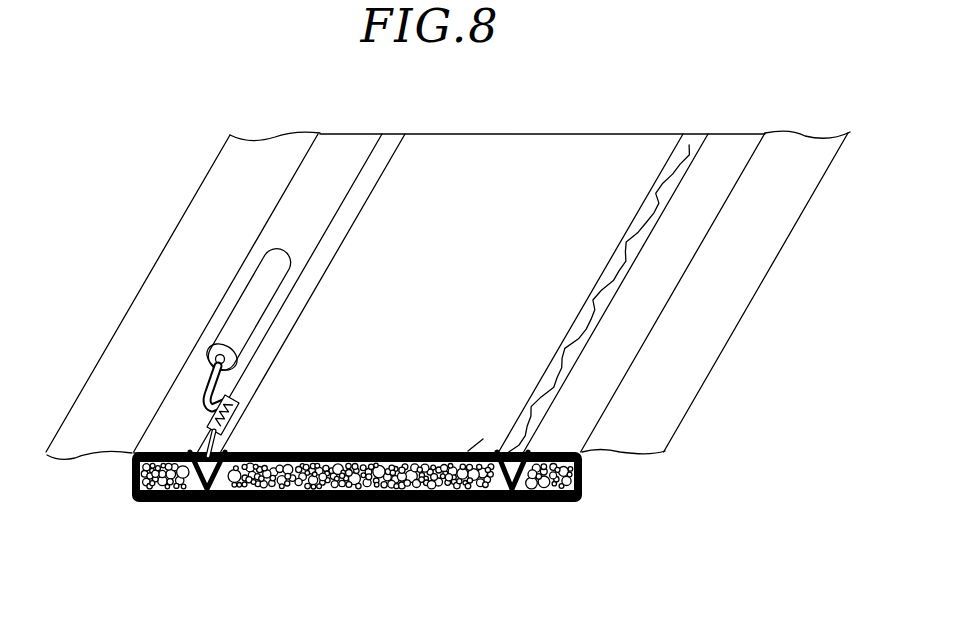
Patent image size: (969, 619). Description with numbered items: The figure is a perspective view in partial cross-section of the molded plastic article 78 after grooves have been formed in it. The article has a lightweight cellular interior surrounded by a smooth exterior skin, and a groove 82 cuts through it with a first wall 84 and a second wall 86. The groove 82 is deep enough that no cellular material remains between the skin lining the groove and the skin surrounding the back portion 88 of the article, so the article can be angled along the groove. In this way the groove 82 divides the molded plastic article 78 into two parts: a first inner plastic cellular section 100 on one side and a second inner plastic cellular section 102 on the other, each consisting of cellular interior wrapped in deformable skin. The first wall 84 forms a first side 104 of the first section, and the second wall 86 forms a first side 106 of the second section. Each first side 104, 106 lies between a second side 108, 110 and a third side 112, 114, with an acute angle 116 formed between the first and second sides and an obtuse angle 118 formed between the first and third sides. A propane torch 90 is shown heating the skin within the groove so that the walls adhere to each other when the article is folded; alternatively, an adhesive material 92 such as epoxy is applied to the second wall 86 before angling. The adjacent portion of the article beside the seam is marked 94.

The molded plastic article 78 is at (604, 96).
The groove 82 is at (388, 150).
The first wall 84 is at (203, 450).
The second wall 86 is at (235, 428).
The back portion 88 is at (377, 503).
The propane torch 90 is at (288, 262).
The adhesive material 92 is at (622, 258).
The second panel 94 is at (612, 452).
The first inner plastic cellular section 100 is at (453, 503).
The second inner plastic cellular section 102 is at (125, 473).
The first side 104 is at (337, 248).
The first side 106 is at (357, 205).
The second side 108 is at (183, 503).
The second side 110 is at (427, 503).
The third side 112 is at (380, 452).
The third side 114 is at (143, 452).
The acute angle 116 is at (288, 503).
The obtuse angle 118 is at (230, 453).